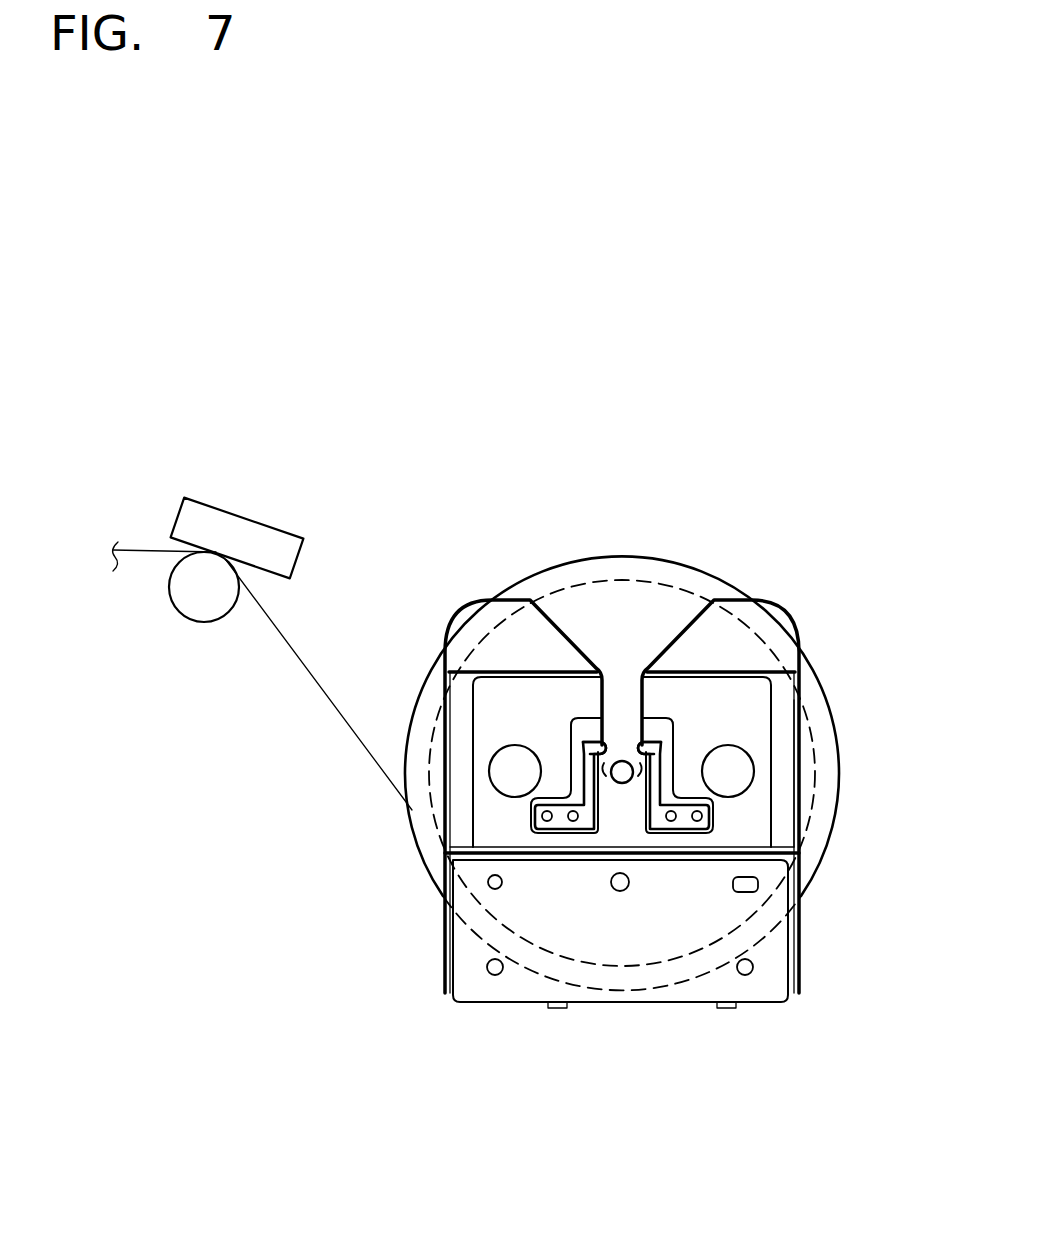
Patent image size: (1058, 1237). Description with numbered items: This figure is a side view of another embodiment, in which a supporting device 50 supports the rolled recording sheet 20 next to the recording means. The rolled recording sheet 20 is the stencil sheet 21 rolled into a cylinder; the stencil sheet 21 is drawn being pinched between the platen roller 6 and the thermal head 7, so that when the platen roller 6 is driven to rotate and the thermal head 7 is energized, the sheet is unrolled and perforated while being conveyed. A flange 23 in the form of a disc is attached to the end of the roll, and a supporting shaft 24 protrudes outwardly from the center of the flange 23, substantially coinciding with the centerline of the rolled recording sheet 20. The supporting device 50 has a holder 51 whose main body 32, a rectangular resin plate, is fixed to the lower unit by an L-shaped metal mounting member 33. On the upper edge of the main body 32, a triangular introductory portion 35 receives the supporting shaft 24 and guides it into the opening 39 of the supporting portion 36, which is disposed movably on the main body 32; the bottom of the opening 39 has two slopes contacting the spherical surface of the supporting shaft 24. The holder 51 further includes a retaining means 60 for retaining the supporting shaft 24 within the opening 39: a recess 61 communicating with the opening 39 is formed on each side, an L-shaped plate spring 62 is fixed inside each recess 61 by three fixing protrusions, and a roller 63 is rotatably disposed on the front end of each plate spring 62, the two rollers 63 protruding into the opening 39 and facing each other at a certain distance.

The platen roller 6 is at (203, 613).
The thermal head 7 is at (233, 513).
The rolled recording sheet 20 is at (433, 727).
The stencil sheet 21 is at (322, 688).
The flange 23 is at (819, 684).
The supporting shaft 24 is at (624, 786).
The main body 32 is at (802, 868).
The mounting member 33 is at (765, 910).
The introductory portion 35 is at (686, 628).
The supporting portion 36 is at (755, 820).
The opening 39 is at (646, 708).
The supporting device 50 is at (628, 713).
The holder 51 is at (704, 854).
The retaining means 60 is at (587, 555).
The recess 61 is at (536, 806).
The plate spring 62 is at (597, 742).
The roller 63 is at (612, 750).